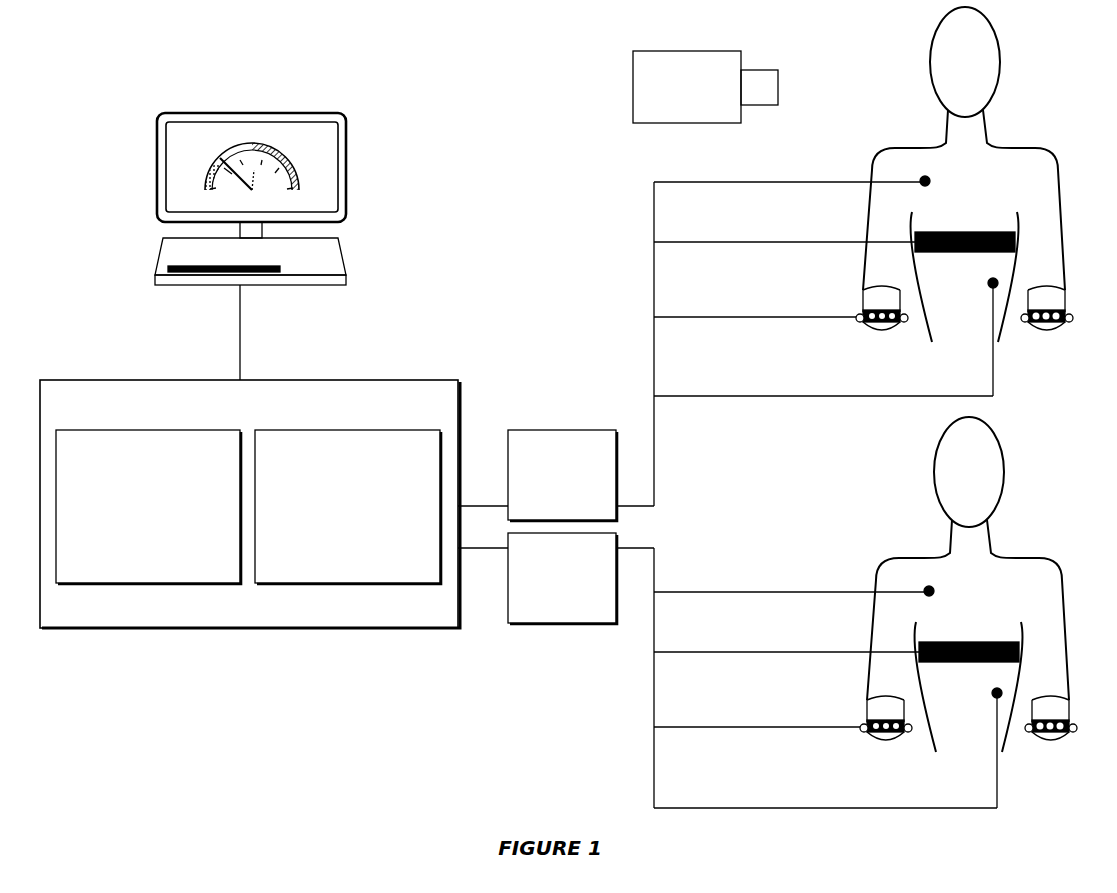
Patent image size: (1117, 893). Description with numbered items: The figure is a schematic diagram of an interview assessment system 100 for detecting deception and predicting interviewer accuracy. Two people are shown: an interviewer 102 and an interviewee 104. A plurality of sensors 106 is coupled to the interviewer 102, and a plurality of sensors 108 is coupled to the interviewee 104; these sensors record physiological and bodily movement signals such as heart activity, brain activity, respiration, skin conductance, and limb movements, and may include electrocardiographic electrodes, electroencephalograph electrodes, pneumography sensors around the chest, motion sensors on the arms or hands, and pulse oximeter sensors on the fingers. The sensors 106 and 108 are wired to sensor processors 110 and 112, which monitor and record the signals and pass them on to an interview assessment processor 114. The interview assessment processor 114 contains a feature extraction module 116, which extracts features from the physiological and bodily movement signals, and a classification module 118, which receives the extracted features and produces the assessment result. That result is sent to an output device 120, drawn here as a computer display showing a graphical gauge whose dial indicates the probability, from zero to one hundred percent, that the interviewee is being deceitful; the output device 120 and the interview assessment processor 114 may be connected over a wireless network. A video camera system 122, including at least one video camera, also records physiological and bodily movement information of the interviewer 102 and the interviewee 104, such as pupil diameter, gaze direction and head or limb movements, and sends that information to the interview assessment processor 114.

The interview assessment system 100 is at (563, 52).
The interviewer 102 is at (1038, 148).
The interviewee 104 is at (983, 584).
The sensors 106 is at (930, 181).
The sensors 108 is at (994, 684).
The sensor processor 110 is at (562, 475).
The sensor processor 112 is at (562, 578).
The interview assessment processor 114 is at (250, 504).
The feature extraction module 116 is at (348, 507).
The classification module 118 is at (148, 507).
The output device 120 is at (216, 113).
The video camera system 122 is at (778, 88).